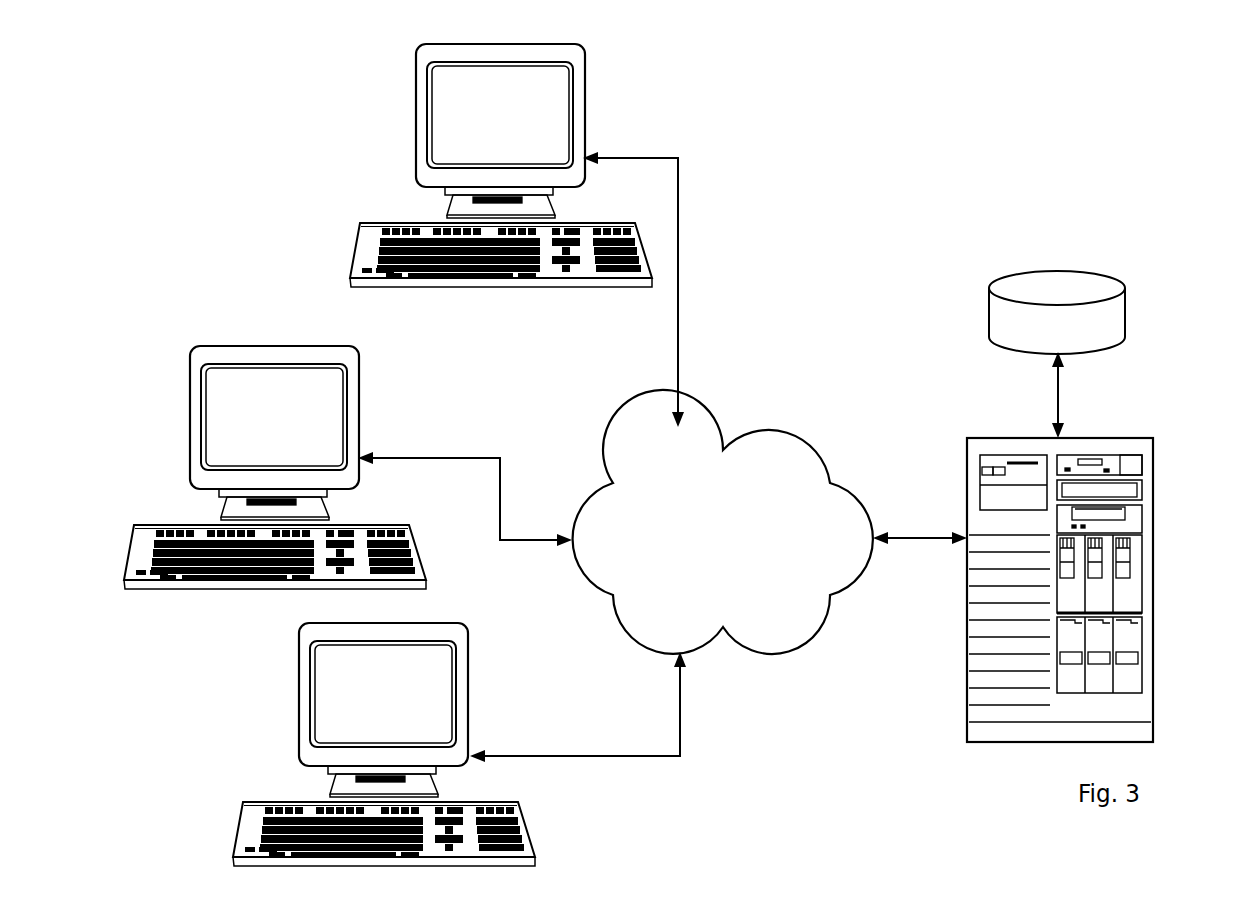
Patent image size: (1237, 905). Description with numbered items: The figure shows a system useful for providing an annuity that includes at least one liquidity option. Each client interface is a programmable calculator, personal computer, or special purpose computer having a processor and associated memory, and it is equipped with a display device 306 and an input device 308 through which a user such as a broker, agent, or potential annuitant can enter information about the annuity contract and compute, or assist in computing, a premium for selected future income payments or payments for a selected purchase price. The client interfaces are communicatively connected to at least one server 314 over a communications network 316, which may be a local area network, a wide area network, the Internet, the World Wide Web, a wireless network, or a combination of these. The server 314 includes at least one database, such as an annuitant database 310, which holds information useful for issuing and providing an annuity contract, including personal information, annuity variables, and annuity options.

The display device 306 is at (468, 95).
The input device 308 is at (433, 288).
The annuitant database 310 is at (989, 310).
The server 314 is at (1153, 588).
The communications network 316 is at (767, 427).